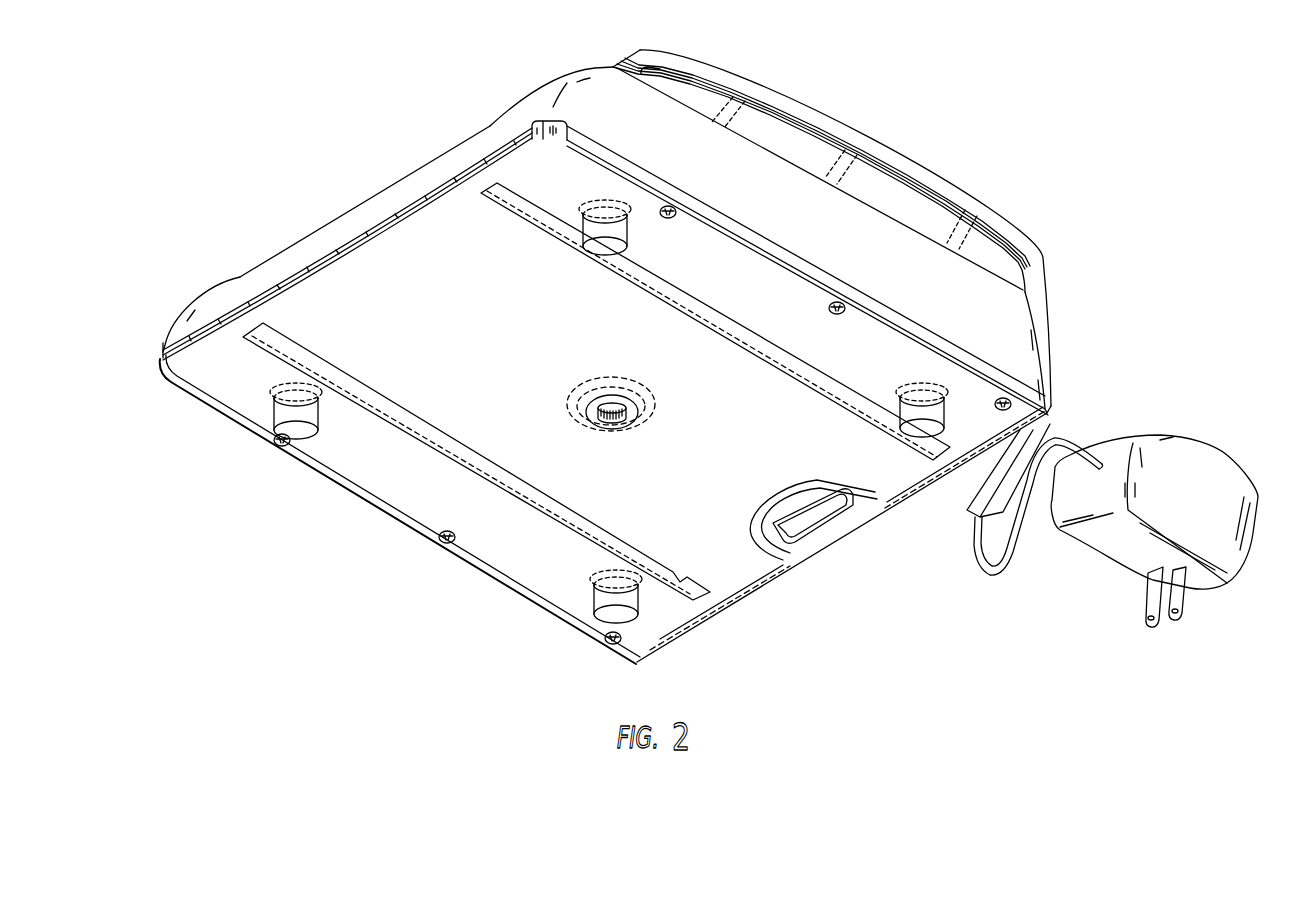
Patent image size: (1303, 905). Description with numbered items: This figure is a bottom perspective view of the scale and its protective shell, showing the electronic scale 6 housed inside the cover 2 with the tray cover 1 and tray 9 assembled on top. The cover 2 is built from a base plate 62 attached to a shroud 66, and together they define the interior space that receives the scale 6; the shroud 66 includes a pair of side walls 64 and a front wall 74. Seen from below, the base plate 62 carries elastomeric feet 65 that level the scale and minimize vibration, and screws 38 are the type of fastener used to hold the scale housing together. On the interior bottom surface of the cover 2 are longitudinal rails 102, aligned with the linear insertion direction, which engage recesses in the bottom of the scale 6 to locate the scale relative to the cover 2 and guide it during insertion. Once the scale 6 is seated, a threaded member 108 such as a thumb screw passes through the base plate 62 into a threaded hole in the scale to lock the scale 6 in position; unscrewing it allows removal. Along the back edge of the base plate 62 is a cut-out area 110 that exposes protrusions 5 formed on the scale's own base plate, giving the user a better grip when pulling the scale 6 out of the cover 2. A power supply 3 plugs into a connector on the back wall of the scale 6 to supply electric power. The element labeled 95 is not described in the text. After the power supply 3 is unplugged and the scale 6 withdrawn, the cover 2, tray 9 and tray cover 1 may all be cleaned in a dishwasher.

The tray cover 1 is at (940, 182).
The cover 2 is at (1052, 311).
The power supply 3 is at (1236, 457).
The protrusions 5 is at (819, 532).
The electronic scale 6 is at (733, 623).
The tray 9 is at (945, 218).
The screws 38 is at (668, 220).
The base plate 62 is at (505, 567).
The side walls 64 is at (1015, 343).
The elastomeric feet 65 is at (602, 247).
The shroud 66 is at (531, 93).
The front wall 74 is at (330, 232).
The corner of base 95 is at (1052, 410).
The rails 102 is at (768, 350).
The threaded member 108 is at (607, 422).
The cut-out area 110 is at (806, 509).